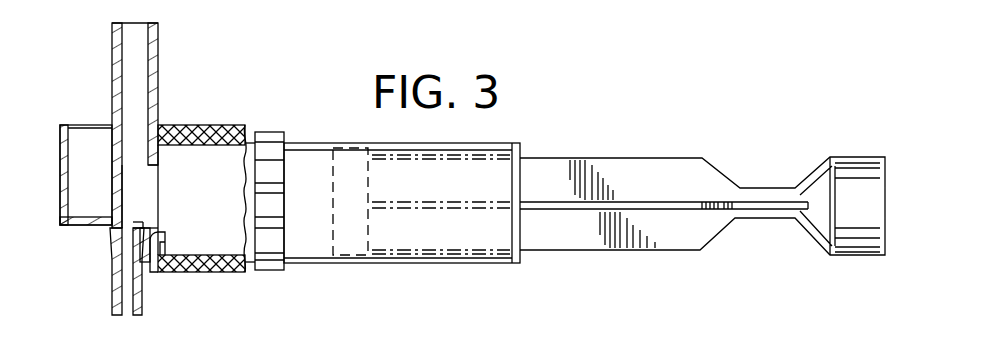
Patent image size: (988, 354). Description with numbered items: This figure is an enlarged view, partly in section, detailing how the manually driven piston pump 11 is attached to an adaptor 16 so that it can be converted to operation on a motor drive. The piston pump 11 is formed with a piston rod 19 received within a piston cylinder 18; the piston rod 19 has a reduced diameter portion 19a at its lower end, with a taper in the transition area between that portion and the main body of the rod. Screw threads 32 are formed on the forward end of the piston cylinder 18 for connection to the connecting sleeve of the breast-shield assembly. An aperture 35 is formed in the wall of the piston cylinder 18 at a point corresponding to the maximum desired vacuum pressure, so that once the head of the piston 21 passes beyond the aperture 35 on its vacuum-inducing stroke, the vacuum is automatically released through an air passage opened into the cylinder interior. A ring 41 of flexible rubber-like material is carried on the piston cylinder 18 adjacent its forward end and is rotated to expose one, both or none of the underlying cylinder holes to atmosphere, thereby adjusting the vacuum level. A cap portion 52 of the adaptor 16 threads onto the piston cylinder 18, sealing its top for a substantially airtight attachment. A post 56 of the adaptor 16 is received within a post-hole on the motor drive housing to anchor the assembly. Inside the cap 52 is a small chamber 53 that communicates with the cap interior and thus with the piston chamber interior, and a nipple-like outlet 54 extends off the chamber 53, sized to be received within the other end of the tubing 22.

The piston pump 11 is at (523, 134).
The adaptor 16 is at (171, 112).
The piston cylinder 18 is at (515, 265).
The piston rod 19 is at (652, 158).
The reduced diameter portion 19a is at (752, 212).
The piston 21 is at (343, 158).
The tubing 22 is at (112, 300).
The screw threads 32 is at (220, 265).
The aperture 35 is at (465, 262).
The ring 41 is at (270, 132).
The cap portion 52 is at (200, 128).
The chamber 53 is at (140, 196).
The outlet 54 is at (112, 240).
The post 56 is at (118, 65).